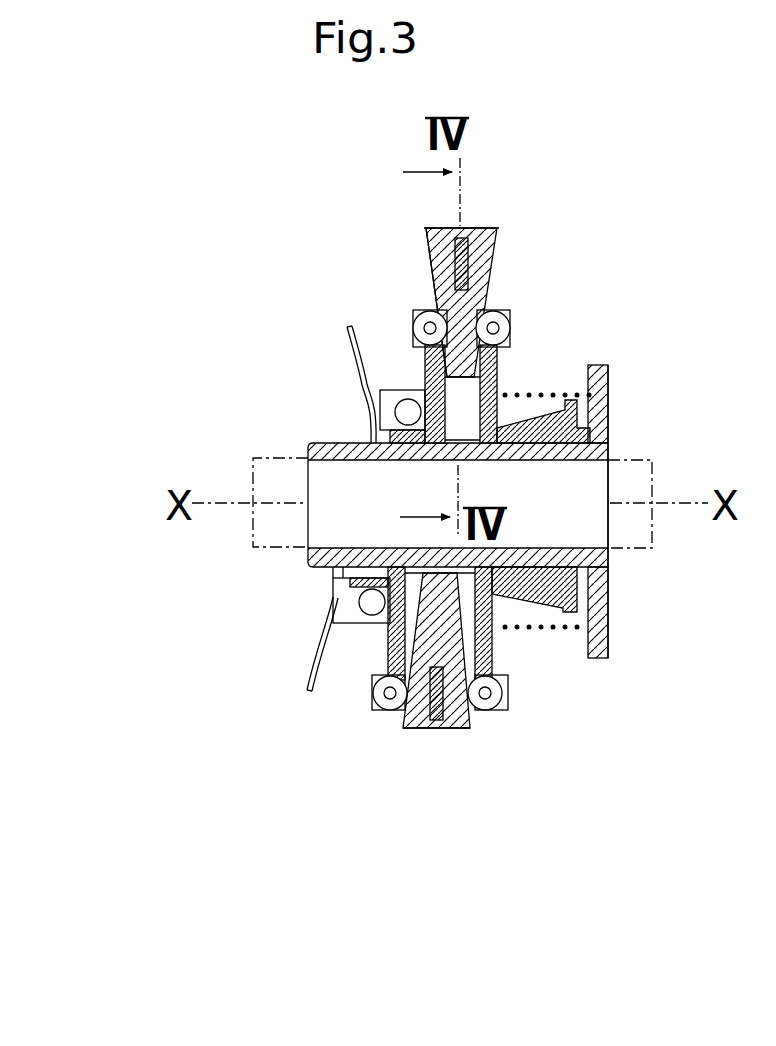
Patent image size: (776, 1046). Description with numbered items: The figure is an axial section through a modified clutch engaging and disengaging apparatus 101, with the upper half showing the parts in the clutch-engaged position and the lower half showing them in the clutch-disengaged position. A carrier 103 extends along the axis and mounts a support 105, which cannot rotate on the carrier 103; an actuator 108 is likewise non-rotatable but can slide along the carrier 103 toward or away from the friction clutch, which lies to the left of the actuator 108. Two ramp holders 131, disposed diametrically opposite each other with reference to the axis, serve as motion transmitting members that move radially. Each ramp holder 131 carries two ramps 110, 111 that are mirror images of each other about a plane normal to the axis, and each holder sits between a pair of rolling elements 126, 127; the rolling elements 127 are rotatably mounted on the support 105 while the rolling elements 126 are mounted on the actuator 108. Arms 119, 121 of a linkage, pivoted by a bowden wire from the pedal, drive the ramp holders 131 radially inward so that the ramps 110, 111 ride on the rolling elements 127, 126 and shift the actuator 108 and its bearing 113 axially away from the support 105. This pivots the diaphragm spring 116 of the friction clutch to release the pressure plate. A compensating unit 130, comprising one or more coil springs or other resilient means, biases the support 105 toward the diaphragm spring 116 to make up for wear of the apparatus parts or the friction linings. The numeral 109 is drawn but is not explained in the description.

The clutch engaging and disengaging apparatus 101 is at (592, 153).
The carrier 103 is at (598, 618).
The support 105 is at (572, 583).
The actuator 108 is at (393, 625).
The conical surface 109 is at (404, 742).
The ramp 110 is at (502, 241).
The ramp 111 is at (432, 253).
The bearing 113 is at (370, 598).
The diaphragm spring 116 is at (368, 408).
The arm 119 is at (443, 730).
The arm 121 is at (463, 245).
The rolling element 126 is at (413, 322).
The rolling element 127 is at (510, 322).
The compensating unit 130 is at (546, 658).
The ramp holder 131 is at (403, 728).